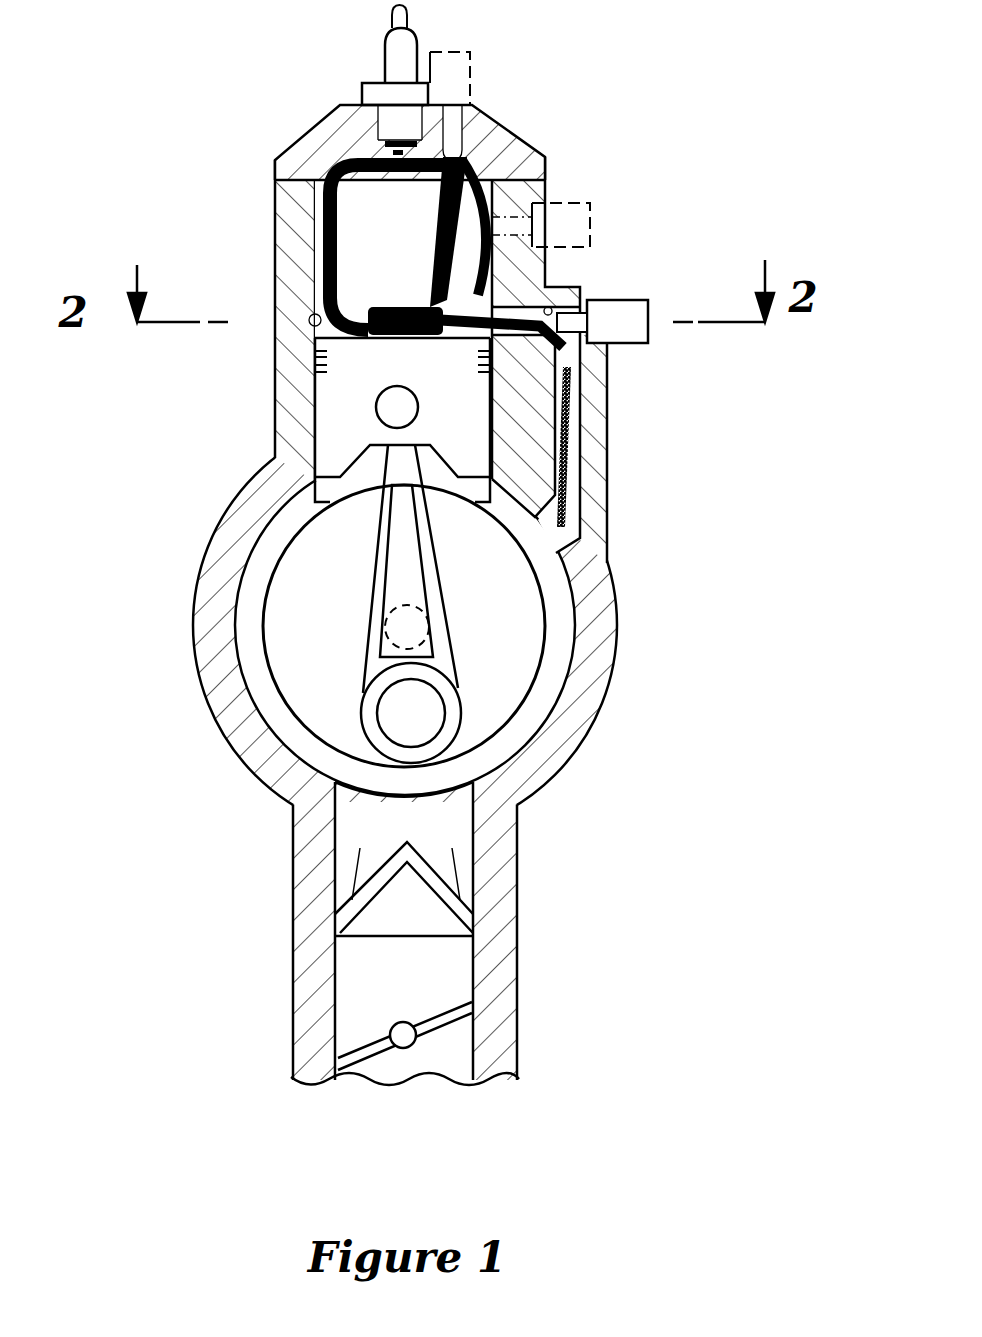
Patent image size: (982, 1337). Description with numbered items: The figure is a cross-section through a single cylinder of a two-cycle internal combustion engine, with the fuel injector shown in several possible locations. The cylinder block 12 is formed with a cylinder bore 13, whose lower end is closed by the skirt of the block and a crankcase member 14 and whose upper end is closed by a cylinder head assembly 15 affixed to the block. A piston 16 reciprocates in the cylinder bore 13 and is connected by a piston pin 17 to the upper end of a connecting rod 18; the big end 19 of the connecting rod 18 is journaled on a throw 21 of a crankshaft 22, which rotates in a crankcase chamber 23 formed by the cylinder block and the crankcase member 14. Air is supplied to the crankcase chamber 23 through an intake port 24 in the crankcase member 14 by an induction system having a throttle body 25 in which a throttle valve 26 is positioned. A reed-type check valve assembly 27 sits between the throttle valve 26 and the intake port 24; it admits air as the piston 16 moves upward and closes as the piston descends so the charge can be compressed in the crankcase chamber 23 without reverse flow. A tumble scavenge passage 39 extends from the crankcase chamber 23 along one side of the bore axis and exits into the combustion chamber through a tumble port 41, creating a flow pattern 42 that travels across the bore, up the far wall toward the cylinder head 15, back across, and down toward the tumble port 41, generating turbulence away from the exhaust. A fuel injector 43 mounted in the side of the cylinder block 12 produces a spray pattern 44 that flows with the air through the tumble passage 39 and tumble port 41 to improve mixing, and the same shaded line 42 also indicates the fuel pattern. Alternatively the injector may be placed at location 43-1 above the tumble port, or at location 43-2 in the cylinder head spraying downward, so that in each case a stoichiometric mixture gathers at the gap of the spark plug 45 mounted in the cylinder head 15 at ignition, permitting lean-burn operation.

The cylinder block 12 is at (285, 205).
The cylinder bore 13 is at (313, 317).
The crankcase member 14 is at (210, 677).
The cylinder head assembly 15 is at (305, 138).
The piston 16 is at (327, 456).
The piston pin 17 is at (377, 412).
The connecting rod 18 is at (430, 548).
The big end of connecting rod 19 is at (357, 728).
The throw 21 is at (455, 705).
The crankshaft 22 is at (430, 627).
The crankcase chamber 23 is at (552, 686).
The intake port 24 is at (447, 810).
The throttle body 25 is at (510, 955).
The throttle valve 26 is at (510, 1045).
The reed-type check valve assembly 27 is at (438, 890).
The tumble scavenge passage 39 is at (572, 467).
The tumble port 41 is at (465, 330).
The flow pattern 42 is at (323, 237).
The fuel injector 43 is at (632, 325).
The fuel injector location 43-1 is at (590, 218).
The fuel injector location 43-2 is at (470, 65).
The spray pattern 44 is at (557, 308).
The spark plug 45 is at (395, 48).